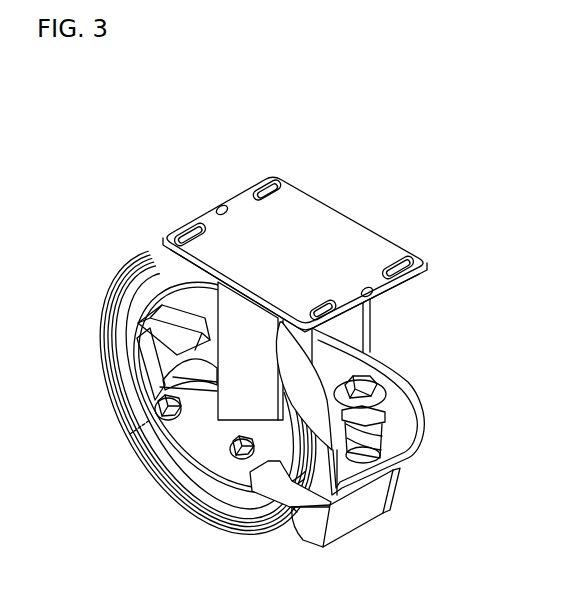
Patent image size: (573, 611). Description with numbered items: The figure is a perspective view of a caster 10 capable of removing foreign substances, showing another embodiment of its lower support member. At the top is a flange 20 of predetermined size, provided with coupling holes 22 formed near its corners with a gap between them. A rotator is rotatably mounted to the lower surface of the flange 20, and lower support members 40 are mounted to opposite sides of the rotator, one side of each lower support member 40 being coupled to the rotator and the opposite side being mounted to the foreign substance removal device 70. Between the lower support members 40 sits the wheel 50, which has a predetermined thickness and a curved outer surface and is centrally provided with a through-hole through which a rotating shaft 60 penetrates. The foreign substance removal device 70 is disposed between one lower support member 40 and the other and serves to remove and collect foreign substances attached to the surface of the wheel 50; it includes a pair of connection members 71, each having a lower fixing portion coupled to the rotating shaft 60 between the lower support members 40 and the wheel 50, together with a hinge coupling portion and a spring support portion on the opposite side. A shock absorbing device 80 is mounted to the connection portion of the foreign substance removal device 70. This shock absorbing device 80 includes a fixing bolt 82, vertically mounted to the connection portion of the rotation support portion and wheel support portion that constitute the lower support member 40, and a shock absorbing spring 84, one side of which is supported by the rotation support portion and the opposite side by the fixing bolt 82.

The caster 10 is at (357, 98).
The flange 20 is at (241, 178).
The coupling holes 22 is at (405, 276).
The lower support member 40 is at (202, 482).
The wheel 50 is at (110, 386).
The rotating shaft 60 is at (130, 434).
The connection member 71 is at (162, 470).
The foreign substance removal device 70 is at (362, 525).
The shock absorbing device 80 is at (505, 387).
The fixing bolt 82 is at (420, 404).
The shock absorbing spring 84 is at (417, 432).